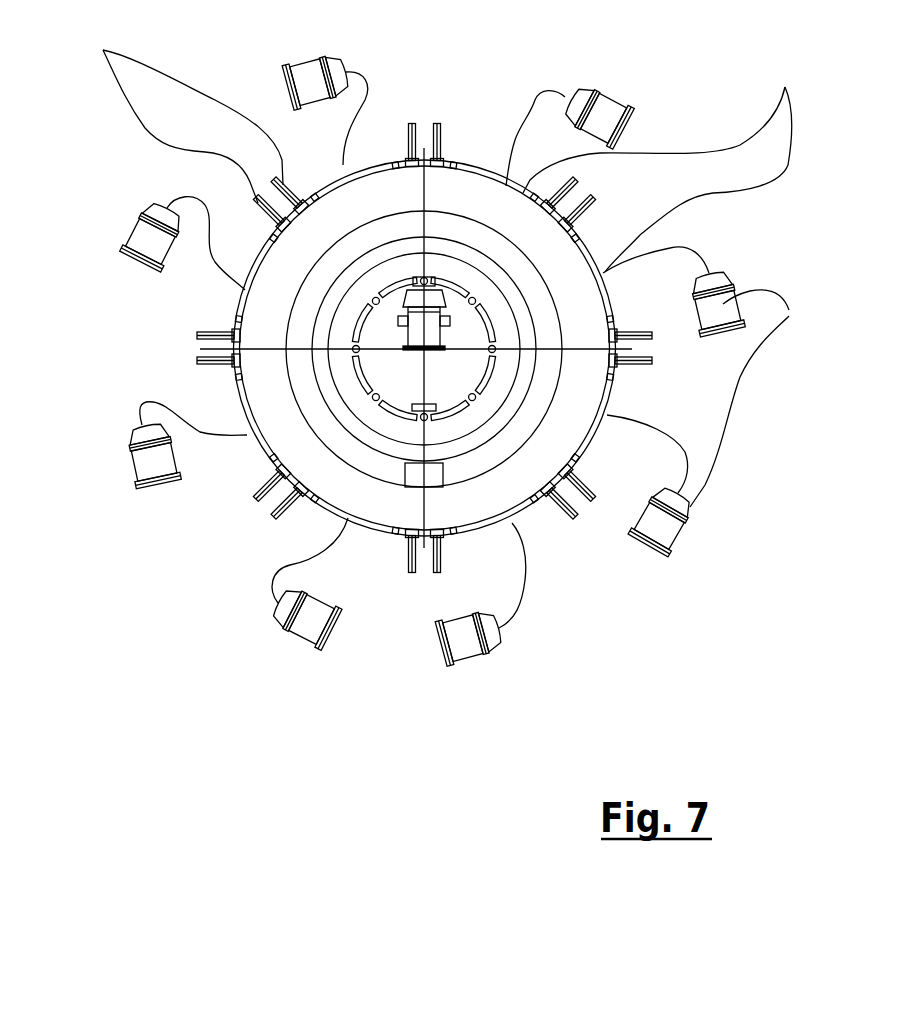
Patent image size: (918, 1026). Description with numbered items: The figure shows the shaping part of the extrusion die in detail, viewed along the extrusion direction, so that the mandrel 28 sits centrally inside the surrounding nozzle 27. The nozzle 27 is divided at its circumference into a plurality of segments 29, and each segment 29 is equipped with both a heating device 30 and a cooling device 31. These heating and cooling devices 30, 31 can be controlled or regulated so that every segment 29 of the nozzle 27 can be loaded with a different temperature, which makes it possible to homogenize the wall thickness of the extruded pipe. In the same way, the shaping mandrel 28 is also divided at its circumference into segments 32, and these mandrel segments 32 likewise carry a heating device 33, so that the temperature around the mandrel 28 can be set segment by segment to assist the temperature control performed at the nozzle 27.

The nozzle 27 is at (465, 47).
The mandrel 28 is at (483, 387).
The segment of the nozzle 29 is at (675, 170).
The heating device 30 is at (759, 398).
The cooling device 31 is at (176, 119).
The segment of the mandrel 32 is at (366, 376).
The heating device 33 is at (428, 328).